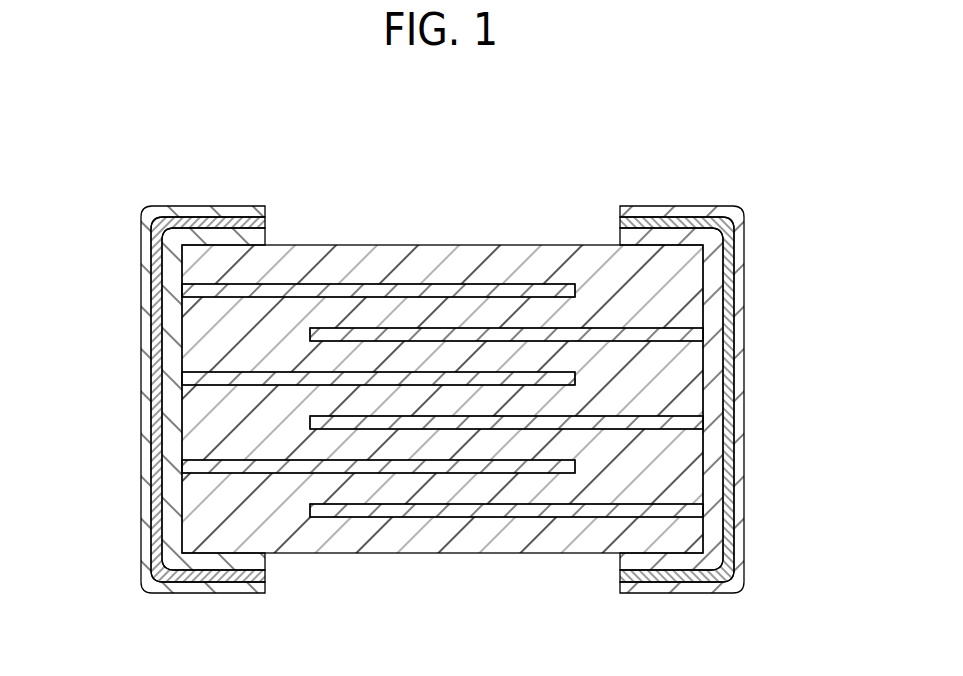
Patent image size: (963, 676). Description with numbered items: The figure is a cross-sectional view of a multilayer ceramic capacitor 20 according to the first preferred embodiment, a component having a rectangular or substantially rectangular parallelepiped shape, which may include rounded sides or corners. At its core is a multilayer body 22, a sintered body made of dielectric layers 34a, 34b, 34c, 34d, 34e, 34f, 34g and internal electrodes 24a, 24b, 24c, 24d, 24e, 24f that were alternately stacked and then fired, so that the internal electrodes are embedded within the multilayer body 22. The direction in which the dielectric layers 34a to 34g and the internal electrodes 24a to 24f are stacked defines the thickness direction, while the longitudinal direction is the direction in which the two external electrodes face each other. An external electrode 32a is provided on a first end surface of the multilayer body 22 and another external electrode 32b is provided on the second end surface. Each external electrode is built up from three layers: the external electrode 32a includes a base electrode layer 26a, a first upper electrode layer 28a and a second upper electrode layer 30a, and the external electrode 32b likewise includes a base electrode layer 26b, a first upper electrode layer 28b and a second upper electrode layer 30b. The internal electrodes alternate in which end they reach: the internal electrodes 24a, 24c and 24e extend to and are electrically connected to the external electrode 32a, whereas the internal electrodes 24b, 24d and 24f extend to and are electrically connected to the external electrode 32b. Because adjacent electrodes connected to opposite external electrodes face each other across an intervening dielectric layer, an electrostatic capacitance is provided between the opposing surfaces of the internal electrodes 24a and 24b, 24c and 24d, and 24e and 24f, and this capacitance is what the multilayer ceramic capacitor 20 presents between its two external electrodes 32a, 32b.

The multilayer ceramic capacitor 20 is at (459, 647).
The multilayer body 22 is at (427, 245).
The internal electrode 24a is at (577, 288).
The internal electrode 24b is at (700, 334).
The internal electrode 24c is at (577, 378).
The internal electrode 24d is at (700, 422).
The internal electrode 24e is at (577, 466).
The internal electrode 24f is at (700, 510).
The base electrode layer 26a is at (140, 240).
The base electrode layer 26b is at (745, 240).
The first upper electrode layer 28a is at (183, 217).
The first upper electrode layer 28b is at (702, 217).
The second upper electrode layer 30a is at (218, 212).
The second upper electrode layer 30b is at (667, 212).
The external electrode 32a is at (243, 123).
The external electrode 32b is at (807, 123).
The dielectric layer 34a is at (197, 264).
The dielectric layer 34b is at (197, 308).
The dielectric layer 34c is at (197, 352).
The dielectric layer 34d is at (197, 396).
The dielectric layer 34e is at (197, 440).
The dielectric layer 34f is at (197, 484).
The dielectric layer 34g is at (197, 532).